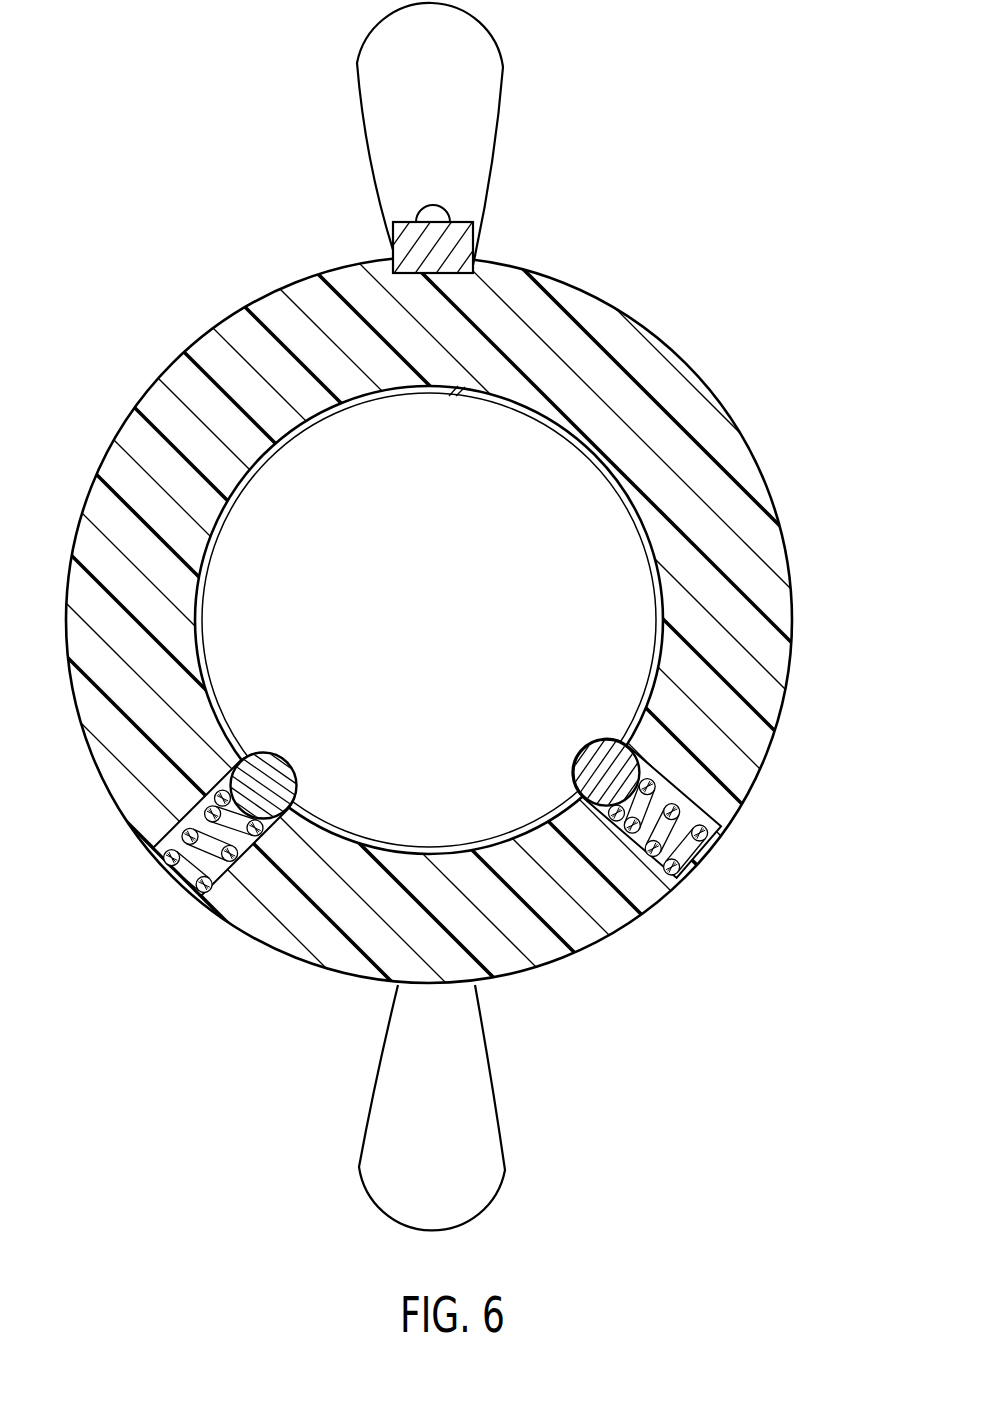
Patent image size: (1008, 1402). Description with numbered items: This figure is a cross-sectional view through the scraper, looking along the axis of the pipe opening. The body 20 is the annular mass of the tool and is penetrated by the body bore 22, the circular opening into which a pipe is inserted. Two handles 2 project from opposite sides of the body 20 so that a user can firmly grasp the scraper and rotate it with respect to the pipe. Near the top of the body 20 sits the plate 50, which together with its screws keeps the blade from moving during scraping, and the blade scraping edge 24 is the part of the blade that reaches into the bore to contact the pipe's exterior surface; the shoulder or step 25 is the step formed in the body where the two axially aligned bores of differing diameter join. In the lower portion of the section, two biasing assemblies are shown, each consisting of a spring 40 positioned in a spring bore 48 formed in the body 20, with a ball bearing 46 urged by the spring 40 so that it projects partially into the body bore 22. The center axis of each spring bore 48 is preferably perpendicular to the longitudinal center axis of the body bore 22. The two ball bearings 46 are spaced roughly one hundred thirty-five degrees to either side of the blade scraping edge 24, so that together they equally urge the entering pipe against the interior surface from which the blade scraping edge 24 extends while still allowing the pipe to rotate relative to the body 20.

The handles 2 is at (493, 28).
The body 20 is at (783, 592).
The body bore 22 is at (450, 630).
The blade scraping edge 24 is at (447, 390).
The shoulder or step 25 is at (240, 487).
The spring 40 is at (157, 858).
The ball bearing 46 is at (297, 767).
The spring bore 48 is at (207, 903).
The plate 50 is at (462, 240).